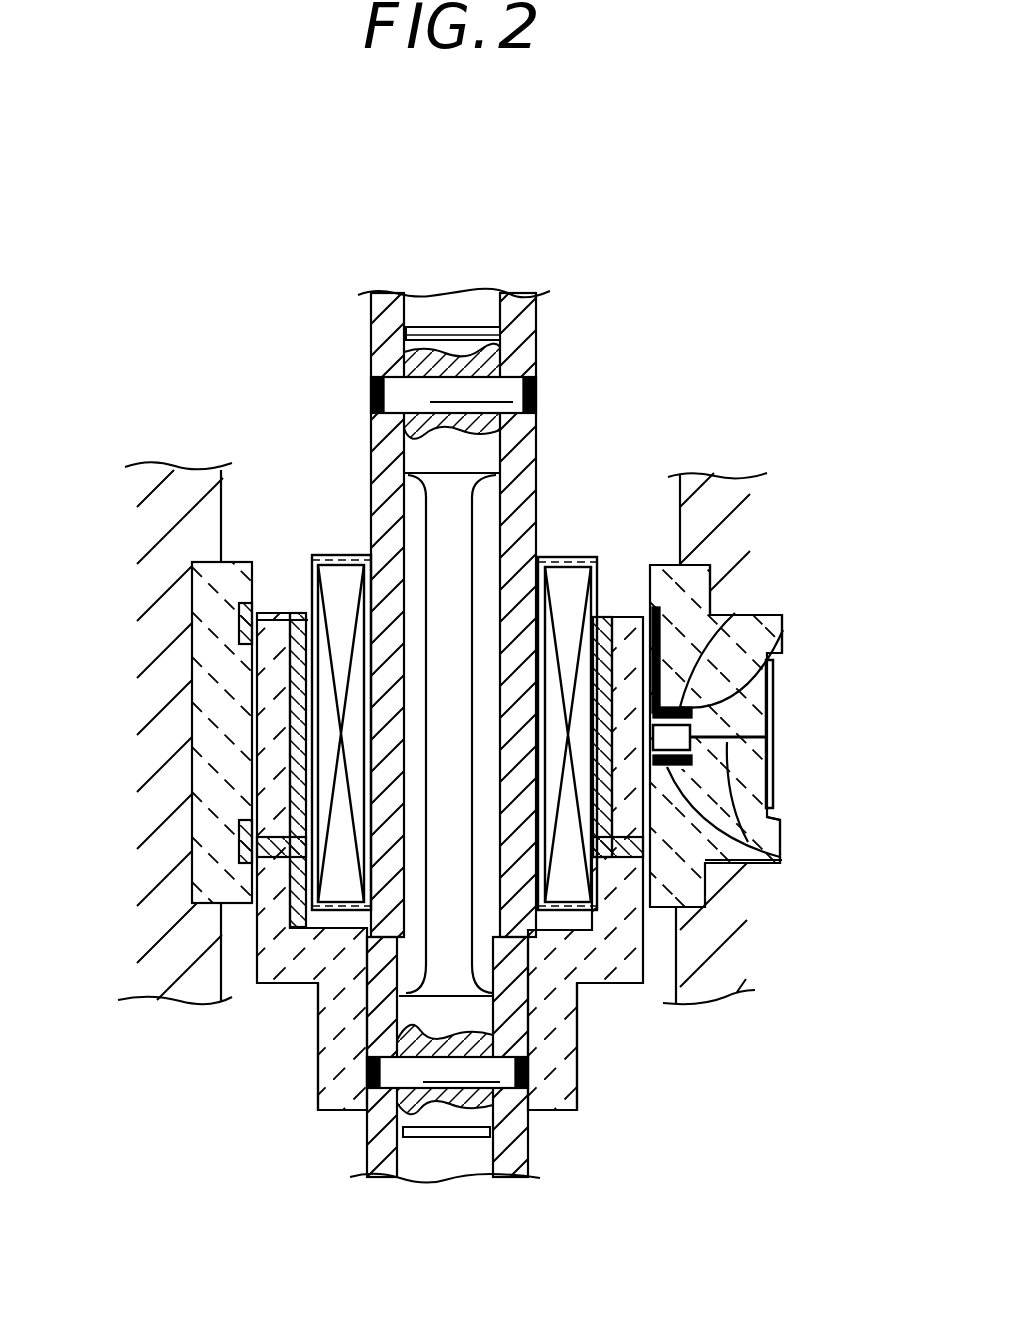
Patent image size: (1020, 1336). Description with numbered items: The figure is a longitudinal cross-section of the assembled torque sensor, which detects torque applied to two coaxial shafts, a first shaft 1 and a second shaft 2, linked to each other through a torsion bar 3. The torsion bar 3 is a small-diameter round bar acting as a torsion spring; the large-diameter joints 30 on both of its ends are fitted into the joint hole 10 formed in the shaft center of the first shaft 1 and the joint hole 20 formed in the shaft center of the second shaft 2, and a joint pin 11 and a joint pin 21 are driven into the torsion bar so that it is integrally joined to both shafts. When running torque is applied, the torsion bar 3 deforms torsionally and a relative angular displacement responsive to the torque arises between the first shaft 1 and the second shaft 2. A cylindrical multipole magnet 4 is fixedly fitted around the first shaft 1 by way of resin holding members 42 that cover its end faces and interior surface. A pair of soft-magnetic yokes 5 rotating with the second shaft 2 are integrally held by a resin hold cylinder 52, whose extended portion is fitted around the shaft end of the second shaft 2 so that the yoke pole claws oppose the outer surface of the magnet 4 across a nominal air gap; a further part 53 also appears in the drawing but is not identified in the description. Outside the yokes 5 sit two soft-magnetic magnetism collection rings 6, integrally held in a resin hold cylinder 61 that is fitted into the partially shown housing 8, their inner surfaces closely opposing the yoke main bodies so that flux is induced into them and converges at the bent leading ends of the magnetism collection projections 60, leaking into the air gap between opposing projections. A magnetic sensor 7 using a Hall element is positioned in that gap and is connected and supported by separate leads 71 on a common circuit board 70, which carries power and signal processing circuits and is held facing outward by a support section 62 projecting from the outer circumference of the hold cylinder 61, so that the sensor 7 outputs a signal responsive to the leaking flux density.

The first shaft 1 is at (530, 343).
The joint hole 10 is at (493, 307).
The joint pin 11 is at (520, 397).
The second shaft 2 is at (527, 1133).
The joint hole 20 is at (487, 1167).
The joint pin 21 is at (367, 1128).
The torsion bar 3 is at (470, 520).
The joint 30 is at (410, 452).
The cylindrical magnet 4 is at (312, 597).
The holding member 42 is at (340, 550).
The magnetic yoke 5 is at (277, 613).
The hold cylinder 52 is at (266, 772).
The housing bottom 53 is at (567, 1058).
The magnetism collection ring 6 is at (243, 630).
The magnetism collection projection 60 is at (715, 700).
The hold cylinder 61 is at (210, 707).
The support section 62 is at (730, 613).
The magnetic sensor 7 is at (773, 692).
The circuit board 70 is at (773, 765).
The lead 71 is at (780, 835).
The housing 8 is at (707, 472).